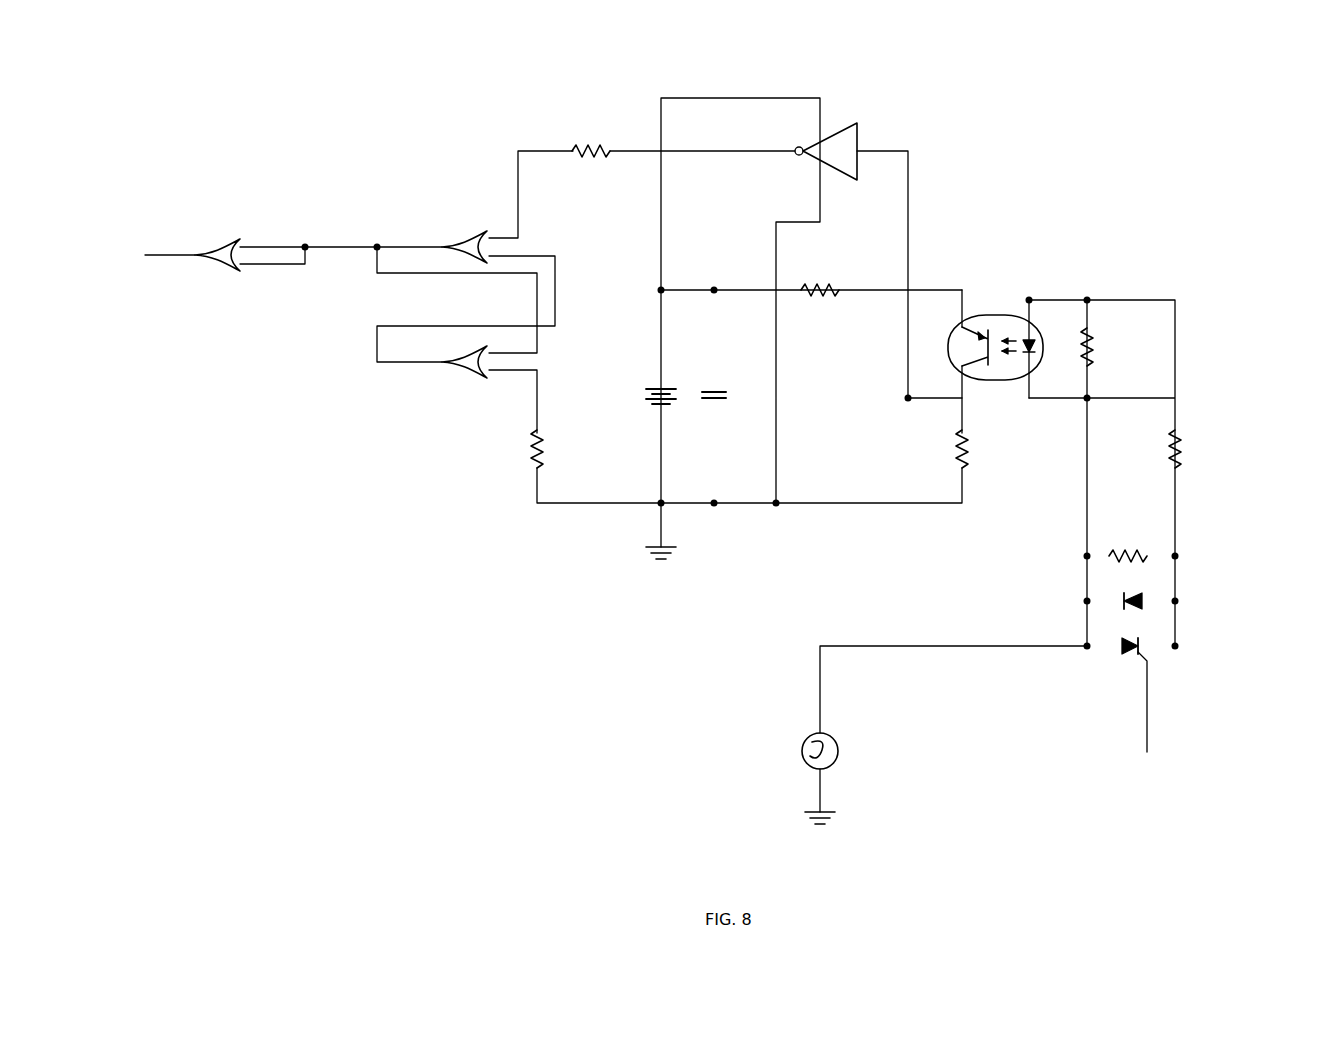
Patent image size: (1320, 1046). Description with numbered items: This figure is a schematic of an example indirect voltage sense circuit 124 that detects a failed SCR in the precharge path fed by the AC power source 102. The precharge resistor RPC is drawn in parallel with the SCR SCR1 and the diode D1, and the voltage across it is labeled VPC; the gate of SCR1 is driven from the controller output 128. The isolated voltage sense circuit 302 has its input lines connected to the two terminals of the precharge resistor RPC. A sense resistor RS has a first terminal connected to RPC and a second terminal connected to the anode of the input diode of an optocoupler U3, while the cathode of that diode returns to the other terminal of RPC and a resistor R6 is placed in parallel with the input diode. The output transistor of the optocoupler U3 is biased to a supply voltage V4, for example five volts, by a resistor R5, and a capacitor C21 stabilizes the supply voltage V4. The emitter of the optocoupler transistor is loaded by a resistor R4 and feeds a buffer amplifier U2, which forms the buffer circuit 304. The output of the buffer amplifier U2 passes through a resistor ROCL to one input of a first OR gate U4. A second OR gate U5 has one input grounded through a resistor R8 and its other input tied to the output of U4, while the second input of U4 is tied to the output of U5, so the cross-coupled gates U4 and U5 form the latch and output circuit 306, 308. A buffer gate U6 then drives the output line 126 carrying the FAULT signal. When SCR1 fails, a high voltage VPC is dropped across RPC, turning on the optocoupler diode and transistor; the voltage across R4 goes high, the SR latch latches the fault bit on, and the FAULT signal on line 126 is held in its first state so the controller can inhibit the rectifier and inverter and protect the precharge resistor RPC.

The indirect voltage sense circuit 124 is at (1229, 152).
The output line 126 is at (148, 254).
The controller output 128 is at (1147, 708).
The AC power source 102 is at (801, 751).
The isolated voltage sense circuit 302 is at (1243, 258).
The buffer circuit 304 is at (945, 75).
The latch circuit 306 is at (555, 130).
The output 308 is at (475, 292).
The buffer amplifier U2 is at (838, 128).
The optocoupler U3 is at (997, 313).
The first OR gate U4 is at (455, 229).
The second OR gate U5 is at (455, 380).
The buffer gate U6 is at (215, 240).
The resistor ROCL is at (590, 165).
The resistor R4 is at (955, 440).
The resistor R5 is at (828, 288).
The resistor R6 is at (1097, 345).
The resistor R8 is at (545, 445).
The sense resistor RS is at (1183, 448).
The precharge resistor RPC is at (1128, 546).
The precharge resistor voltage VPC is at (1132, 494).
The supply voltage V4 is at (648, 388).
The capacitor C21 is at (722, 388).
The diode D1 is at (1133, 591).
The SCR SCR1 is at (1126, 635).